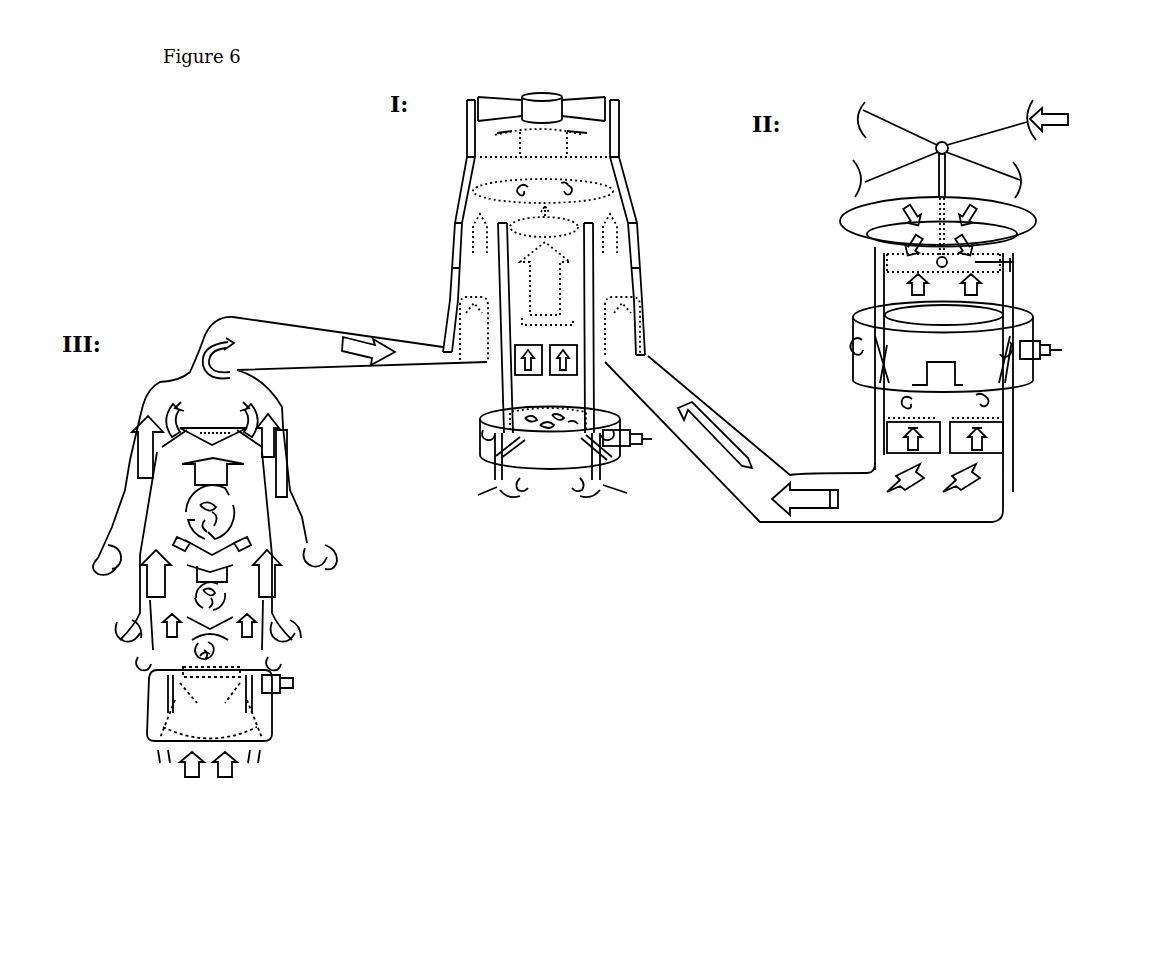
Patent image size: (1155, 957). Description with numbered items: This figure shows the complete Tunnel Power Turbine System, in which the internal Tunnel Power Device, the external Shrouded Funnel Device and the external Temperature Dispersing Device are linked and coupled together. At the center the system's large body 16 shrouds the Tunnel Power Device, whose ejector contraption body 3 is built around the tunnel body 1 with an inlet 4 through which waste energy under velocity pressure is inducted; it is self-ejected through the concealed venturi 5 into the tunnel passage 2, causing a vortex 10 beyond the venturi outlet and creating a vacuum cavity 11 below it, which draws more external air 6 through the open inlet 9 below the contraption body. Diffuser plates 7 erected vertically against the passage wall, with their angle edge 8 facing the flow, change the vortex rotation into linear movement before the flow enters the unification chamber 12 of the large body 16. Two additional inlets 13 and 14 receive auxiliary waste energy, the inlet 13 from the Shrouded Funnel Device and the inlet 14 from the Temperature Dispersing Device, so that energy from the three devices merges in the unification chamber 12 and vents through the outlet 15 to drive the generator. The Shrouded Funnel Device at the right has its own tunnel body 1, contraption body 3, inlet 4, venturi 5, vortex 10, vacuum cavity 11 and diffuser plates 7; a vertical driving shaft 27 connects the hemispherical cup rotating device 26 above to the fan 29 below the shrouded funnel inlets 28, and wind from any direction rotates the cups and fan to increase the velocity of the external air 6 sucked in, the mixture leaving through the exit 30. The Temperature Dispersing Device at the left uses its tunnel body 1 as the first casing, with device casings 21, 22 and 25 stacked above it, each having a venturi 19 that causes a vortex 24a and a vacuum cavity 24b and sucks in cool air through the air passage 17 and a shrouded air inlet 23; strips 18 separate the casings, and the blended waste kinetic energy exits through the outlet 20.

The tunnel body 1 is at (584, 287).
The tunnel passage 2 is at (120, 680).
The ejector contraption body 3 is at (472, 450).
The inlet 4 is at (1097, 350).
The venturi 5 is at (128, 731).
The external air 6 is at (569, 531).
The diffuser plates 7 is at (516, 362).
The diffuser plate angle edge 8 is at (575, 378).
The open inlet 9 is at (602, 488).
The vortex 10 is at (586, 412).
The vacuum cavity 11 is at (582, 457).
The unification chamber 12 is at (543, 172).
The inlet 13 is at (605, 358).
The inlet 14 is at (458, 353).
The outlet 15 is at (542, 108).
The large body 16 is at (556, 226).
The air passage 17 is at (265, 580).
The strips 18 is at (295, 506).
The venturi 19 is at (300, 428).
The outlet 20 is at (236, 352).
The device casing 21 is at (150, 643).
The device casing 22 is at (138, 592).
The shrouded air inlet 23 is at (118, 545).
The vortex 24a is at (207, 600).
The vacuum cavity 24b is at (248, 453).
The device casing 25 is at (123, 458).
The hemispherical cup rotating device 26 is at (1072, 119).
The vertical driving shaft 27 is at (950, 150).
The shrouded funnel inlets 28 is at (1030, 231).
The fan 29 is at (1015, 263).
The exit 30 is at (923, 488).